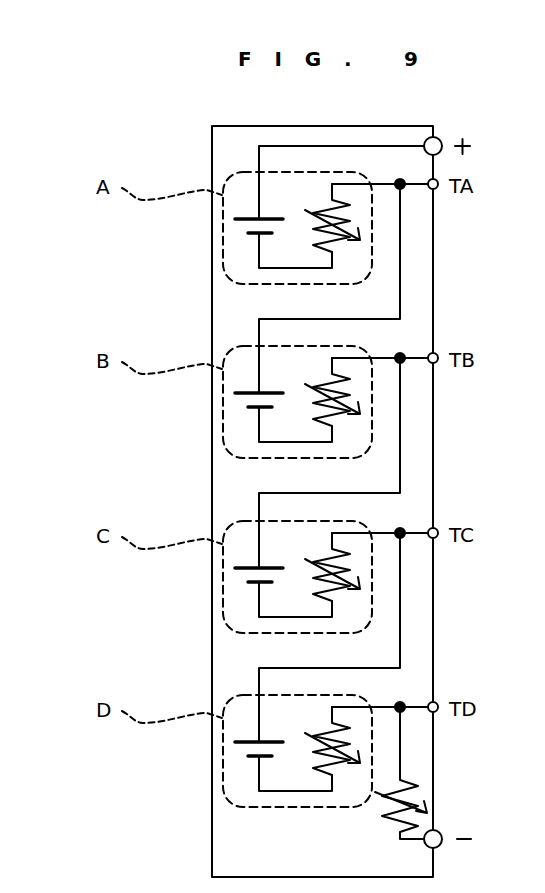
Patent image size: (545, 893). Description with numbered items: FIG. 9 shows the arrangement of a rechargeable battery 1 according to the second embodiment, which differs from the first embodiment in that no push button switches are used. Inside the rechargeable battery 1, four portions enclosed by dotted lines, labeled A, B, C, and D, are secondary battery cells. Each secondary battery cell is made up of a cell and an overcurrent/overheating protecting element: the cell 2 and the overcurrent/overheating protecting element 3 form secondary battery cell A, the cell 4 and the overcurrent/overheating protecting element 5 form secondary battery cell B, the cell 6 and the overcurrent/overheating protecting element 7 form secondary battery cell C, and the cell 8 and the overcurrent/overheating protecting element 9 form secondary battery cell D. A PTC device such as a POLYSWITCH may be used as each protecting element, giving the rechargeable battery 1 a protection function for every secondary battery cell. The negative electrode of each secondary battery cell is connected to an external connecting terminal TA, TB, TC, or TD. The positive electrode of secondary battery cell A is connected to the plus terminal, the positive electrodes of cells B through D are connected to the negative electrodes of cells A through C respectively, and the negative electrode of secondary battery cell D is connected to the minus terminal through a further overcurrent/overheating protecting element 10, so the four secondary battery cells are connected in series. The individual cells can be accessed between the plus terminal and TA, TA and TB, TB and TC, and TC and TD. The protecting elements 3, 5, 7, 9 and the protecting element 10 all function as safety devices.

The rechargeable battery 1 is at (323, 126).
The cell 2 is at (235, 219).
The overcurrent/overheating protecting element 3 is at (350, 208).
The cell 4 is at (235, 393).
The overcurrent/overheating protecting element 5 is at (350, 382).
The cell 6 is at (235, 568).
The overcurrent/overheating protecting element 7 is at (350, 557).
The cell 8 is at (235, 742).
The overcurrent/overheating protecting element 9 is at (350, 731).
The overcurrent/overheating protecting element 10 is at (420, 785).